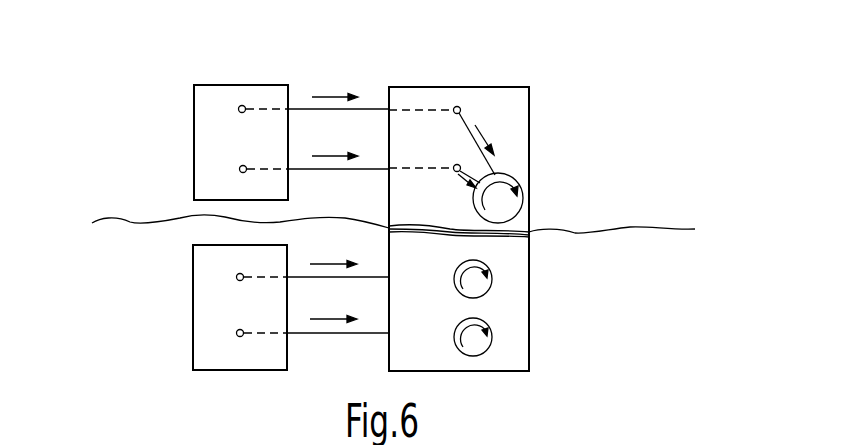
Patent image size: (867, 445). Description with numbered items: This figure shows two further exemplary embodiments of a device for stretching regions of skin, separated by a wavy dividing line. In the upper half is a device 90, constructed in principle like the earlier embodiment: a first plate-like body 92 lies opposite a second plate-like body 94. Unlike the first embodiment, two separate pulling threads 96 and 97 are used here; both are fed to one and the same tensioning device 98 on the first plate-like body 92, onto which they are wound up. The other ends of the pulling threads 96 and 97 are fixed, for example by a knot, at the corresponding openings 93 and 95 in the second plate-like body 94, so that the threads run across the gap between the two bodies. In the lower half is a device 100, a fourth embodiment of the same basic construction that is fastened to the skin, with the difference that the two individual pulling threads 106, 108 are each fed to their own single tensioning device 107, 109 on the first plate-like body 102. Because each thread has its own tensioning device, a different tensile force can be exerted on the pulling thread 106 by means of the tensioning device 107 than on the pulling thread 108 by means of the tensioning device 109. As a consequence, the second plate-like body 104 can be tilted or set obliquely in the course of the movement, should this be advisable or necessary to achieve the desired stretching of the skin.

The device 90 is at (561, 105).
The first plate-like body 92 is at (490, 100).
The opening 93 is at (246, 106).
The second plate-like body 94 is at (213, 93).
The opening 95 is at (241, 171).
The pulling thread 96 is at (297, 108).
The pulling thread 97 is at (328, 170).
The tensioning device 98 is at (510, 178).
The device 100 is at (577, 323).
The first plate-like body 102 is at (503, 362).
The second plate-like body 104 is at (208, 353).
The pulling thread 106 is at (362, 276).
The tensioning device 107 is at (478, 292).
The pulling thread 108 is at (334, 334).
The tensioning device 109 is at (478, 345).